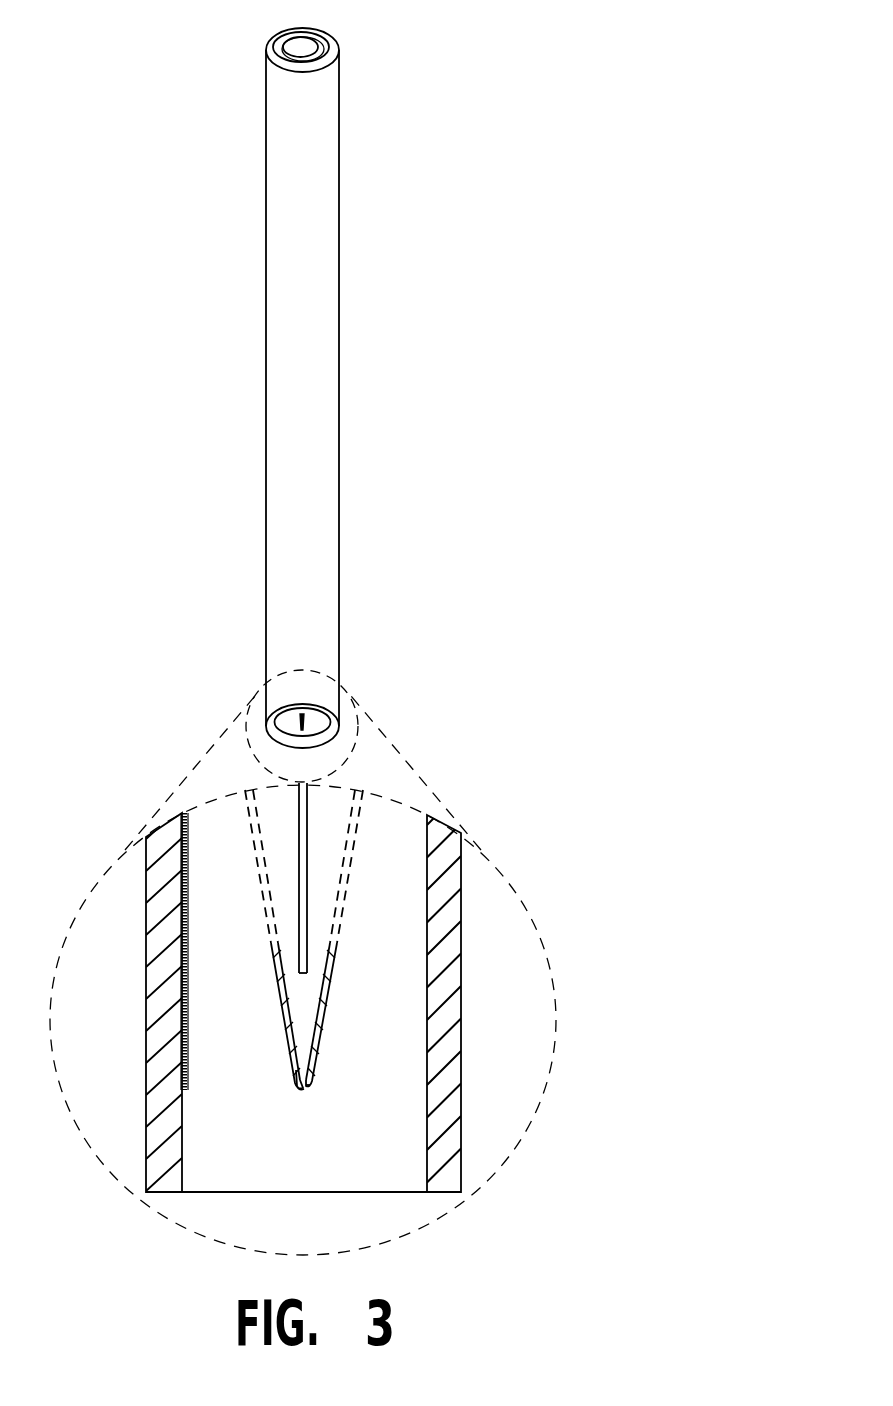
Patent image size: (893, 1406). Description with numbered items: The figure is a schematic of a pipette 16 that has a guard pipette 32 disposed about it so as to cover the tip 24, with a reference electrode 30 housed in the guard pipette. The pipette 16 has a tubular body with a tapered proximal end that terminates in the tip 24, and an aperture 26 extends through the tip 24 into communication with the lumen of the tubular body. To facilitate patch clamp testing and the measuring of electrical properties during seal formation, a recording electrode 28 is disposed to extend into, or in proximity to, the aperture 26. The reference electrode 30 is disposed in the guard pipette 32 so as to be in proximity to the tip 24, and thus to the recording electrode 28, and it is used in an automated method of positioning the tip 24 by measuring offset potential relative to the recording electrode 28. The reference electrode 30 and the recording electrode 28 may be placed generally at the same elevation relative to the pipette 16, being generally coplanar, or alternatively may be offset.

The pipette 16 is at (330, 45).
The tip 24 is at (318, 1083).
The aperture 26 is at (303, 1090).
The recording electrode 28 is at (307, 848).
The reference electrode 30 is at (187, 943).
The guard pipette 32 is at (308, 399).